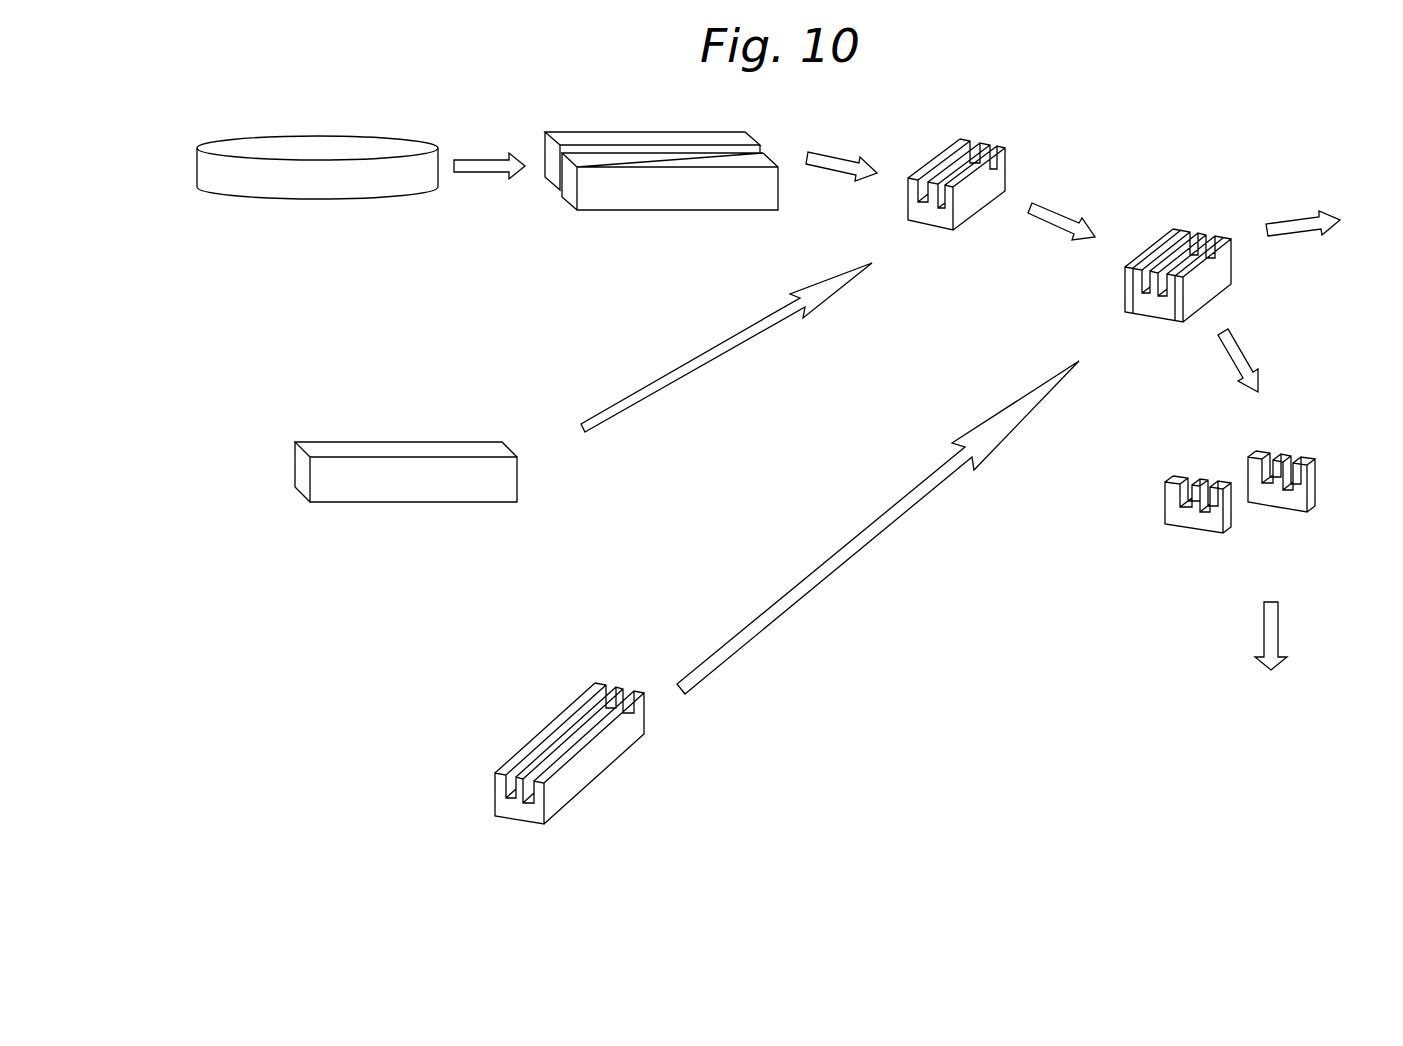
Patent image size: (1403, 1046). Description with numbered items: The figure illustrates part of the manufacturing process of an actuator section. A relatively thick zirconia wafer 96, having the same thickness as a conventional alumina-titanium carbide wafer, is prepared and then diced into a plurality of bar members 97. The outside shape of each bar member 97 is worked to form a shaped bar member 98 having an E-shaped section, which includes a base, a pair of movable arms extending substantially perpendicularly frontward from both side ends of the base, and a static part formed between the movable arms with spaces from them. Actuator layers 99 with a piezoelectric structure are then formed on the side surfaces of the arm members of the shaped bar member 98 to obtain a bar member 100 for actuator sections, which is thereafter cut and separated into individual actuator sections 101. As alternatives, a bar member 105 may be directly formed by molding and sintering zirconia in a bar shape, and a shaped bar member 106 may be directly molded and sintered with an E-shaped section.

The zirconia wafer 96 is at (228, 178).
The bar member 97 is at (550, 172).
The shaped bar member 98 is at (990, 173).
The actuator layer 99 is at (1123, 288).
The bar member for actuator sections 100 is at (1205, 210).
The actuator section 101 is at (1183, 547).
The bar member for actuator sections 105 is at (333, 492).
The shaped bar member for actuator sections 106 is at (557, 798).